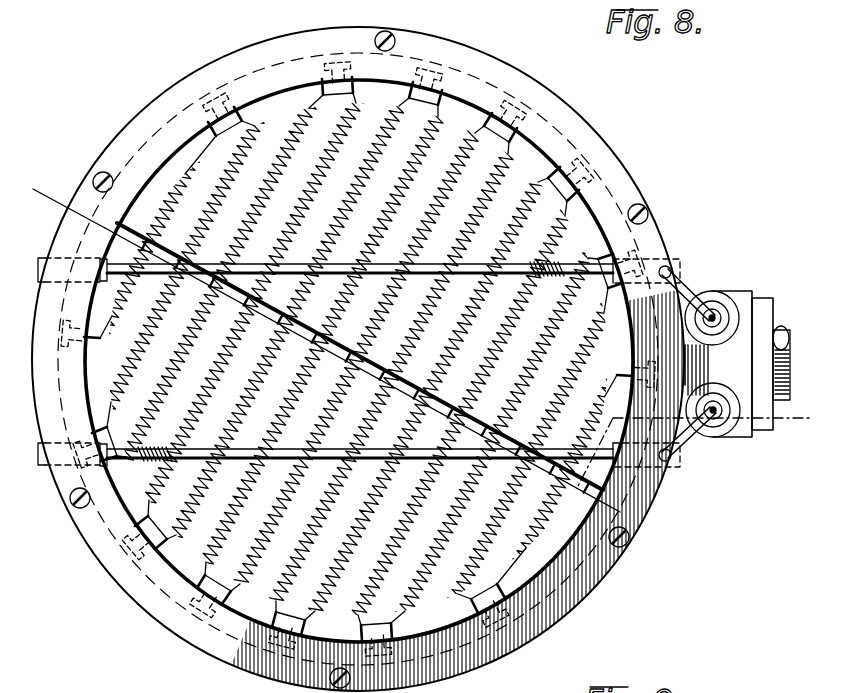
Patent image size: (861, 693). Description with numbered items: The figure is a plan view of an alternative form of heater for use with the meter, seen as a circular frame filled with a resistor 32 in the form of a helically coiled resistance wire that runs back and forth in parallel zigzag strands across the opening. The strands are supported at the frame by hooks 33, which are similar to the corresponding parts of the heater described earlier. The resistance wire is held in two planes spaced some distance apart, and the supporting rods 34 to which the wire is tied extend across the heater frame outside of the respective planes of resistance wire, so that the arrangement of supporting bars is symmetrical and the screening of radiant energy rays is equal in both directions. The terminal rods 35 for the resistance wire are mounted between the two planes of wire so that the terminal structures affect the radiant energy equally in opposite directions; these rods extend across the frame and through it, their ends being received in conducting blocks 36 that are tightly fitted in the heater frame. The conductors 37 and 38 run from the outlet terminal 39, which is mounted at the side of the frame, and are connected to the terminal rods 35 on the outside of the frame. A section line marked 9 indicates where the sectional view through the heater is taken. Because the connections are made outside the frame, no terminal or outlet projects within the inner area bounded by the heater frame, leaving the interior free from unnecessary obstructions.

The section line 9- 9 is at (823, 433).
The resistor 32 is at (546, 176).
The hooks 33 is at (600, 205).
The supporting rods 34 is at (340, 340).
The terminal rods 35 is at (425, 410).
The conducting blocks 36 is at (670, 242).
The conductor 37 is at (700, 297).
The conductor 38 is at (708, 437).
The outlet terminal 39 is at (737, 364).